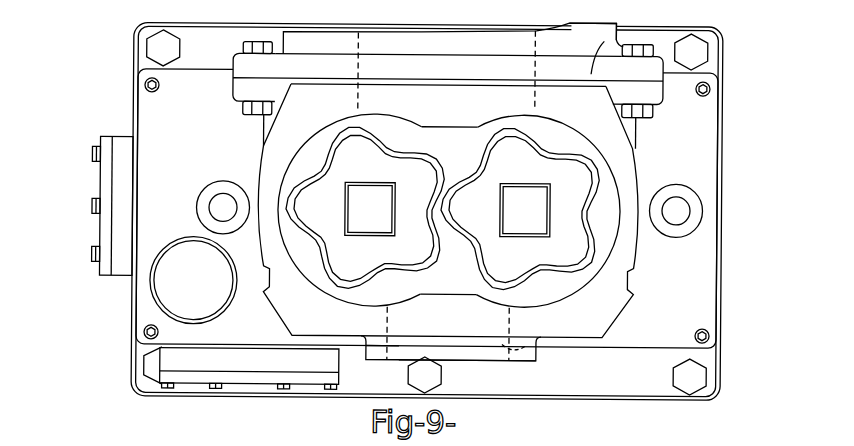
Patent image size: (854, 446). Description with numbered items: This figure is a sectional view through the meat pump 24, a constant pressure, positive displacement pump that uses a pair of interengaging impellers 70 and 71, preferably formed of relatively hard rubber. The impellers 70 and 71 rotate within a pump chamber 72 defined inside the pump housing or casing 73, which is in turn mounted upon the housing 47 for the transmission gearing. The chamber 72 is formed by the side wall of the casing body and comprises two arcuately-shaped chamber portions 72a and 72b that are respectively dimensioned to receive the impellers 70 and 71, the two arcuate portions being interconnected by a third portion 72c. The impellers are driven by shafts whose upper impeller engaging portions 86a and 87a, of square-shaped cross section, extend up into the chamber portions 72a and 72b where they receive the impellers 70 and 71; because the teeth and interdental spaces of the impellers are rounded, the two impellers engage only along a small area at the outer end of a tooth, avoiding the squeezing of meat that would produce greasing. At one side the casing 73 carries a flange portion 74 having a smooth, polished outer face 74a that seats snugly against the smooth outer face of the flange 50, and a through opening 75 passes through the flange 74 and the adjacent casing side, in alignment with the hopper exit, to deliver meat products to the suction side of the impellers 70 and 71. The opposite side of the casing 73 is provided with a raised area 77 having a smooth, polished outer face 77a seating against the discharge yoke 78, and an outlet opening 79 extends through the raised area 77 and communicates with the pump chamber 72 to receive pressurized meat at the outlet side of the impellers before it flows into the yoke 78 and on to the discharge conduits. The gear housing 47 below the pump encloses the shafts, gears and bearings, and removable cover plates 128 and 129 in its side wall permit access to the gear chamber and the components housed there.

The meat pump 24 is at (642, 146).
The housing for the transmission gearing 47 is at (703, 270).
The flange 50 is at (615, 42).
The impeller 70 is at (383, 143).
The impeller 71 is at (541, 147).
The pump chamber 72 is at (560, 282).
The arcuately-shaped chamber portion 72a is at (322, 283).
The arcuately-shaped chamber portion 72b is at (557, 297).
The third portion 72c is at (456, 135).
The pump housing or casing 73 is at (256, 146).
The flange portion 74 is at (243, 88).
The smooth, polished outer face 74a is at (237, 54).
The through opening 75 is at (362, 49).
The raised area 77 is at (543, 358).
The smooth, polished outer face 77a is at (377, 349).
The discharge yoke 78 is at (461, 362).
The outlet opening 79 is at (516, 353).
The upper impeller engaging portion 86a is at (369, 198).
The upper impeller engaging portion 87a is at (518, 198).
The removable cover plate 128 is at (108, 183).
The removable cover plate 129 is at (268, 387).